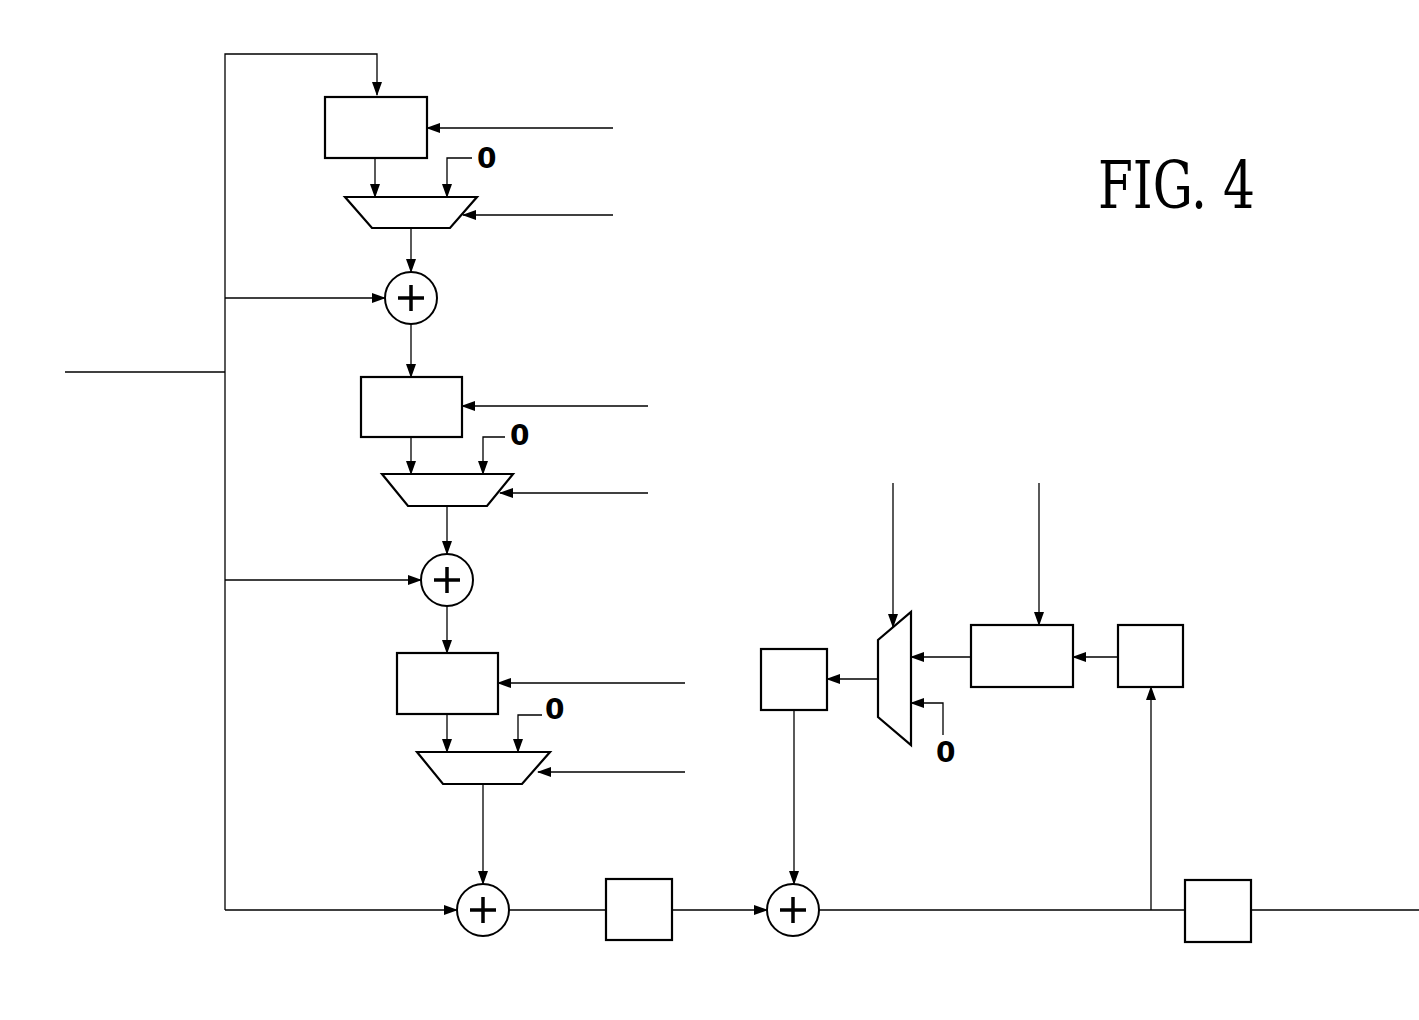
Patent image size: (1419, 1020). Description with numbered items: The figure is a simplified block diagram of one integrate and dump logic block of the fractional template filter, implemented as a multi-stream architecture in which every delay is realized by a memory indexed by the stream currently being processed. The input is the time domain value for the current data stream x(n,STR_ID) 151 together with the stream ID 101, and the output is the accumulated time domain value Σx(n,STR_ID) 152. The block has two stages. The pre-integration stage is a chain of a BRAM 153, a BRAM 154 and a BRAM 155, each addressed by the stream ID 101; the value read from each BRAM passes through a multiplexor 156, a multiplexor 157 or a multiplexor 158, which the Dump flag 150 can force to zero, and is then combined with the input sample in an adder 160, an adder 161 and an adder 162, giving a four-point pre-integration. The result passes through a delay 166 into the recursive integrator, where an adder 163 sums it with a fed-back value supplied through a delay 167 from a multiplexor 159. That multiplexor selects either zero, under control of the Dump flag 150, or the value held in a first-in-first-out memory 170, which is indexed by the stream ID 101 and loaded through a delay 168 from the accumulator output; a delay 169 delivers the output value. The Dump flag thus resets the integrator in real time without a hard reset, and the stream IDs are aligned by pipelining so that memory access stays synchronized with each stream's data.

The stream ID 101 is at (613, 128).
The Dump flag 150 is at (613, 215).
The time domain value for the current data stream x(n,STR_ID) 151 is at (152, 375).
The time domain value for the current data stream Σx(n,STR_ID) 152 is at (1380, 915).
The BRAM 153 is at (324, 129).
The BRAM 154 is at (361, 408).
The BRAM 155 is at (398, 685).
The multiplexor 156 is at (350, 210).
The multiplexor 157 is at (385, 488).
The multiplexor 158 is at (422, 767).
The multiplexor 159 is at (888, 728).
The adder 160 is at (394, 279).
The adder 161 is at (430, 561).
The adder 162 is at (466, 892).
The adder 163 is at (813, 892).
The delay 166 is at (636, 879).
The delay 167 is at (790, 649).
The delay 168 is at (1148, 625).
The delay 169 is at (1214, 880).
The first-in-first-out (FIFO) memory 170 is at (1022, 687).